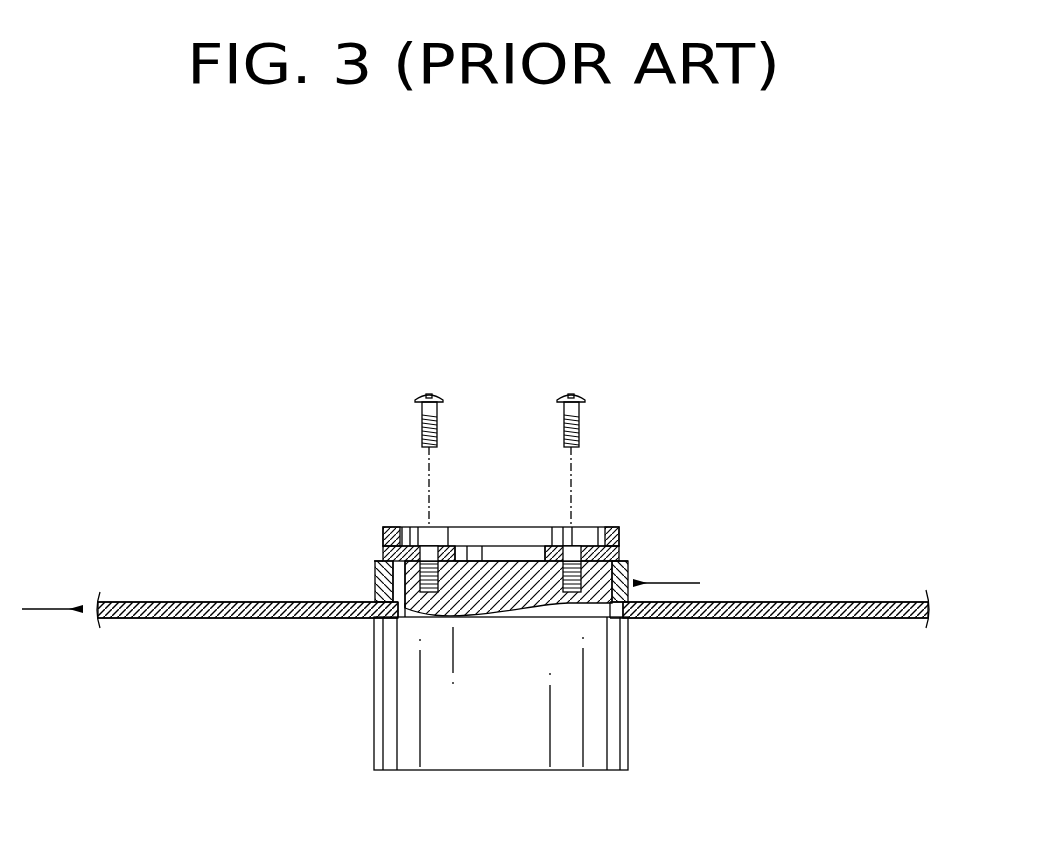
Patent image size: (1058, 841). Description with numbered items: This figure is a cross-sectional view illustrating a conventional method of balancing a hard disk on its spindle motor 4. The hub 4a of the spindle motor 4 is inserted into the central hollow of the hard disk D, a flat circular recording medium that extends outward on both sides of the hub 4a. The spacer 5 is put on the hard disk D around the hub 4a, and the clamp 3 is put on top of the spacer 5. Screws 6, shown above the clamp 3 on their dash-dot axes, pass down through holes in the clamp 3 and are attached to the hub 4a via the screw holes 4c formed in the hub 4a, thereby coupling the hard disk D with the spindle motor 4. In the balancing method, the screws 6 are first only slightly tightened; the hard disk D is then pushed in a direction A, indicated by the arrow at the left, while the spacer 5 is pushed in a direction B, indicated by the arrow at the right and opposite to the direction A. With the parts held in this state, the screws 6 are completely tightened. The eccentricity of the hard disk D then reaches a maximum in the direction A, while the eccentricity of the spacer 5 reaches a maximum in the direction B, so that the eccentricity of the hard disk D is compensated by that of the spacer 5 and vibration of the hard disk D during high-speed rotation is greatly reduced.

The clamp 3 is at (383, 543).
The spindle motor 4 is at (634, 685).
The hub 4a is at (405, 608).
The screw holes 4c is at (571, 553).
The spacer 5 is at (375, 578).
The screws 6 is at (563, 392).
The direction A is at (52, 593).
The direction B is at (676, 583).
The hard disk D is at (818, 602).